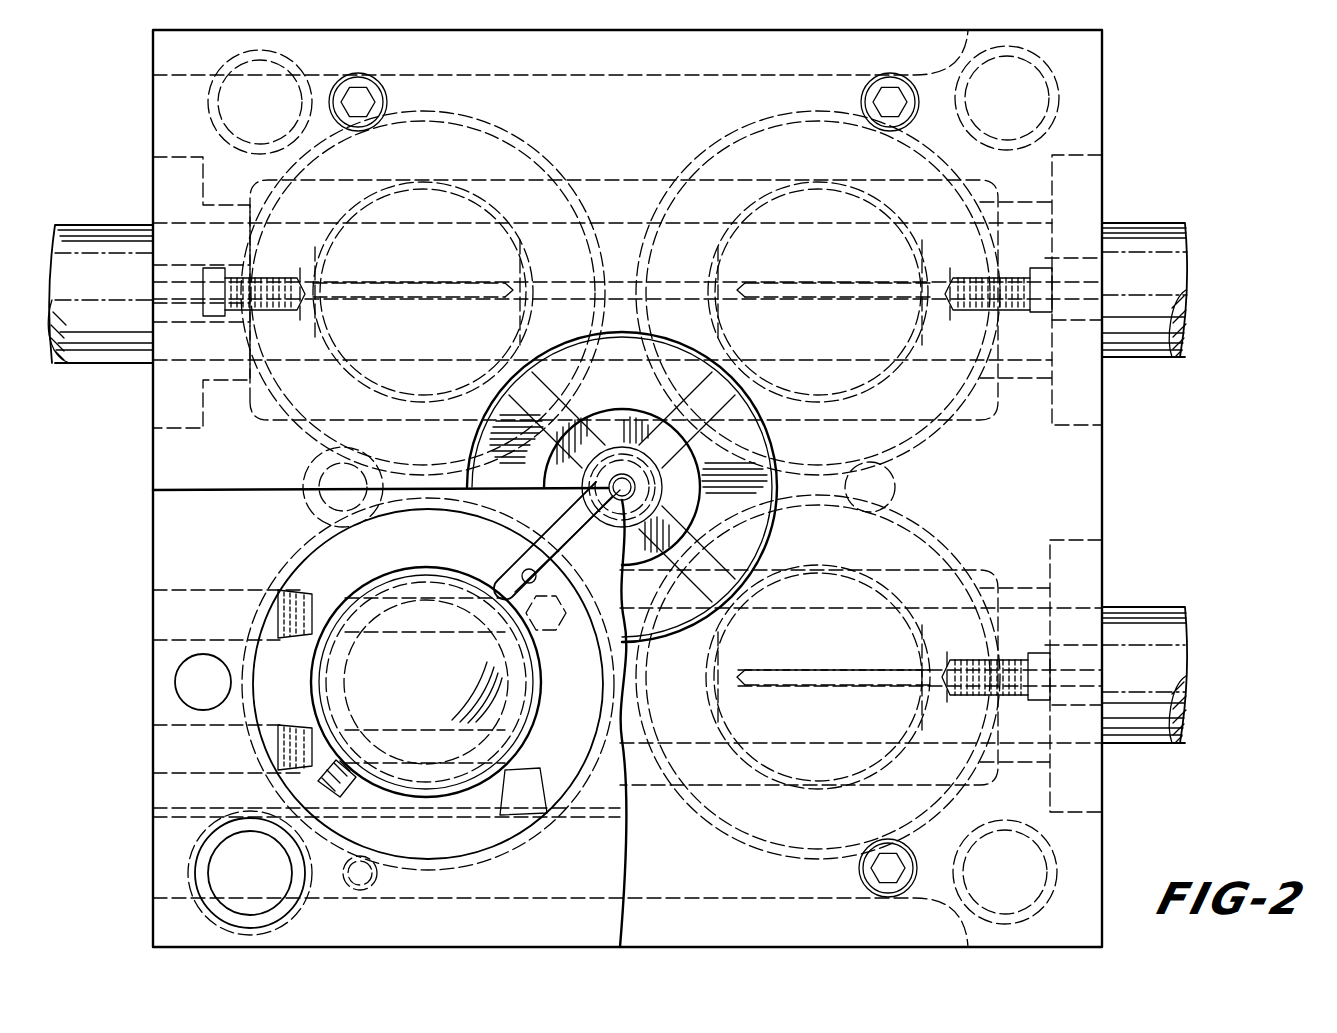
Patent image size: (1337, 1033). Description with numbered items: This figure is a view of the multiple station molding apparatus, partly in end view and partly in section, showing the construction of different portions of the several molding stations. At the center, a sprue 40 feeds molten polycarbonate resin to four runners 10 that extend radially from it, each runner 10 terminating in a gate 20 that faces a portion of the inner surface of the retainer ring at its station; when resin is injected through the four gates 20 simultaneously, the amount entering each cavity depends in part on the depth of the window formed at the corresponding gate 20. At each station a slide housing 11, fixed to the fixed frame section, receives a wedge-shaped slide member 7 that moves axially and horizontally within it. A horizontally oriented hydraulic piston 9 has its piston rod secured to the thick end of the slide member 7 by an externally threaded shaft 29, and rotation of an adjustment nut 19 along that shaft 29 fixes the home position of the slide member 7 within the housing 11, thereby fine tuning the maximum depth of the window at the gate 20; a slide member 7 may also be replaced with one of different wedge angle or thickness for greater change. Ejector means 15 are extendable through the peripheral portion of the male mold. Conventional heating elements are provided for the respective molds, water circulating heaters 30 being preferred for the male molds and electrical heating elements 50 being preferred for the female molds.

The wedge-shaped slide member 7 is at (475, 242).
The hydraulic piston 9 is at (105, 230).
The runner 10 is at (704, 424).
The slide housing 11 is at (398, 182).
The ejector means 15 is at (520, 570).
The adjustment nut 19 is at (216, 318).
The gate 20 is at (506, 372).
The externally threaded shaft 29 is at (288, 318).
The water circulating heater 30 is at (306, 702).
The sprue 40 is at (620, 502).
The electrical heating element 50 is at (409, 283).